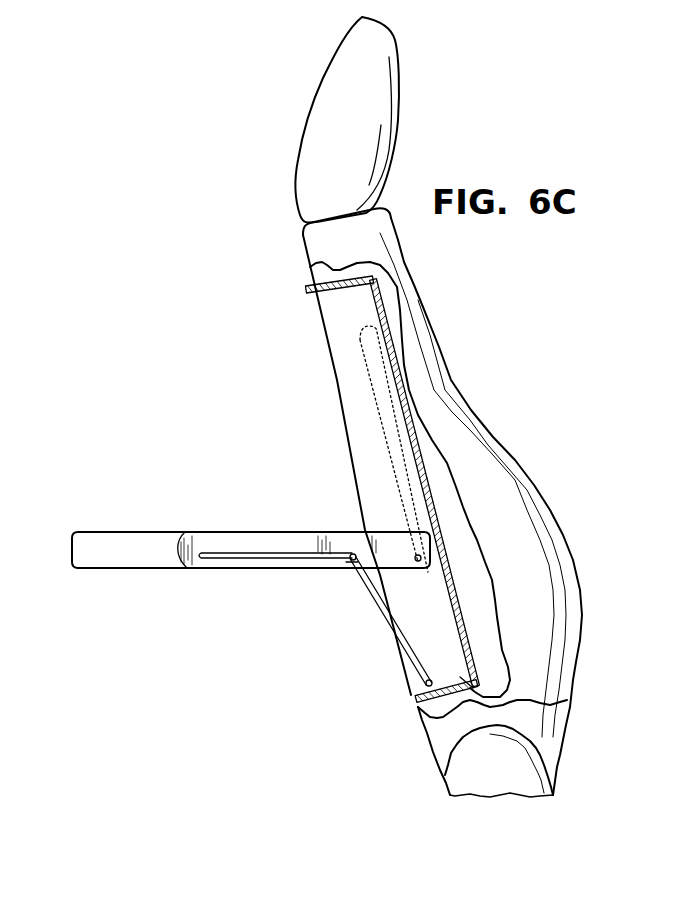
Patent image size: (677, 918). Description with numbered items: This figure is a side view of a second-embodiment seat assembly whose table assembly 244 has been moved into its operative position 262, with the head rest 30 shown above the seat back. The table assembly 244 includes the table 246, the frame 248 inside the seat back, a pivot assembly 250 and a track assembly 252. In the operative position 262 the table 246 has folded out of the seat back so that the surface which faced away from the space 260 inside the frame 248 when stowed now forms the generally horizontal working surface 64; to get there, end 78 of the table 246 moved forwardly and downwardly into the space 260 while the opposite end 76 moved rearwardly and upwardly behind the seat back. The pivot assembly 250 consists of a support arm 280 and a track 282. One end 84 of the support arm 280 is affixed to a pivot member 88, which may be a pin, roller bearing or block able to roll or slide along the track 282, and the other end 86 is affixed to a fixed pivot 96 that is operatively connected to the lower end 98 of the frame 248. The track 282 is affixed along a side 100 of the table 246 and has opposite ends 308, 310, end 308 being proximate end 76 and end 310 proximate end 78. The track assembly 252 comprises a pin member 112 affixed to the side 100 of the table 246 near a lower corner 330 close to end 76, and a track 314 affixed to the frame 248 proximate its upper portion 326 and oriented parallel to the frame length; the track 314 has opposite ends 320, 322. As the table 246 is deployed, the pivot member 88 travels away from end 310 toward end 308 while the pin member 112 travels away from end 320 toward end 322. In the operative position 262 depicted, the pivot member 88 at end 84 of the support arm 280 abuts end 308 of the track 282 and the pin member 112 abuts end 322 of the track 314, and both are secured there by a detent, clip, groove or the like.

The head rest 30 is at (400, 123).
The table assembly 244 is at (221, 126).
The track assembly 252 is at (445, 410).
The end of table 78 is at (433, 543).
The lower corner 330 is at (412, 463).
The pin member 112 is at (432, 568).
The upper portion of frame 326 is at (335, 355).
The frame 248 is at (322, 312).
The track 314 is at (440, 345).
The end of track 320 is at (386, 304).
The end of track 322 is at (427, 573).
The space 260 is at (363, 423).
The working surface 64 is at (233, 540).
The table 246 is at (160, 530).
The end of track 310 is at (193, 533).
The track 282 is at (270, 531).
The end of track 308 is at (360, 531).
The end of table 76 is at (72, 548).
The side of table 100 is at (80, 560).
The support arm 280 is at (350, 648).
The end of support arm 84 is at (356, 556).
The pivot member 88 is at (354, 566).
The pivot assembly 250 is at (379, 668).
The fixed pivot 96 is at (417, 707).
The end of support arm 86 is at (418, 692).
The lower end of frame 98 is at (567, 700).
The operative position 262 is at (288, 735).